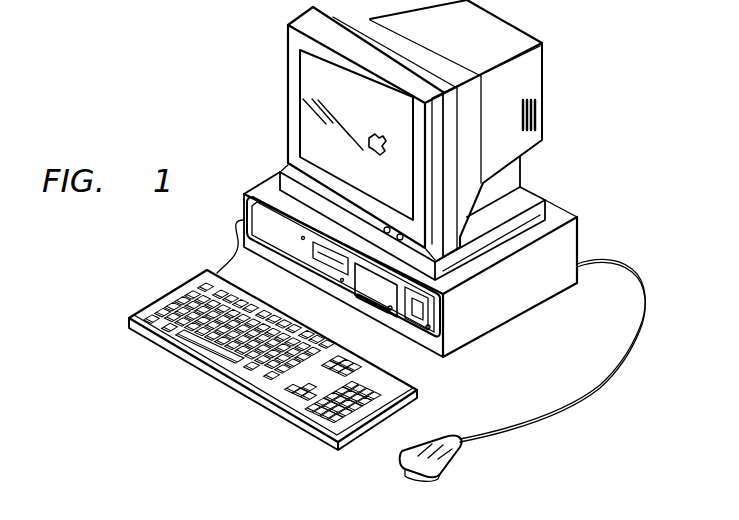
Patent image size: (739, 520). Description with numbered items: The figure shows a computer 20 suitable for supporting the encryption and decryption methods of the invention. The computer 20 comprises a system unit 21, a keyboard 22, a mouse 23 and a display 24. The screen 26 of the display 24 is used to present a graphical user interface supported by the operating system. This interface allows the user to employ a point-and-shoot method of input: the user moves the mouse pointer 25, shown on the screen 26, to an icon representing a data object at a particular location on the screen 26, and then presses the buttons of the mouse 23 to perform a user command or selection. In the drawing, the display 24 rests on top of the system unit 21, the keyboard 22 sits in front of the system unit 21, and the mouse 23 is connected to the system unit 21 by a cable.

The computer 20 is at (238, 152).
The system unit 21 is at (247, 217).
The keyboard 22 is at (153, 313).
The mouse 23 is at (447, 440).
The display 24 is at (290, 74).
The mouse pointer 25 is at (368, 134).
The screen 26 is at (401, 184).